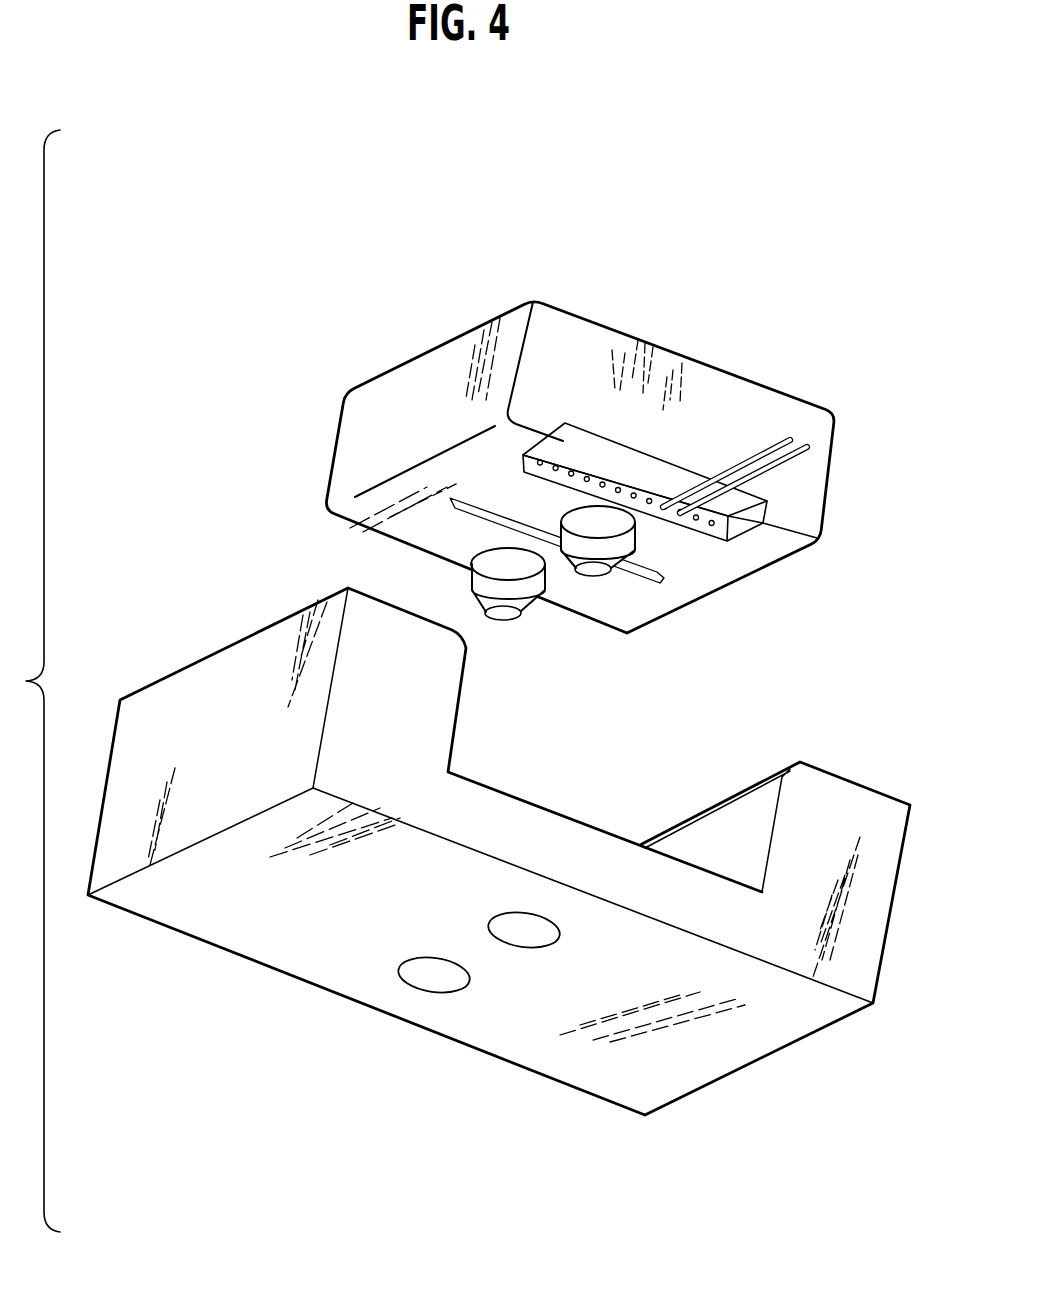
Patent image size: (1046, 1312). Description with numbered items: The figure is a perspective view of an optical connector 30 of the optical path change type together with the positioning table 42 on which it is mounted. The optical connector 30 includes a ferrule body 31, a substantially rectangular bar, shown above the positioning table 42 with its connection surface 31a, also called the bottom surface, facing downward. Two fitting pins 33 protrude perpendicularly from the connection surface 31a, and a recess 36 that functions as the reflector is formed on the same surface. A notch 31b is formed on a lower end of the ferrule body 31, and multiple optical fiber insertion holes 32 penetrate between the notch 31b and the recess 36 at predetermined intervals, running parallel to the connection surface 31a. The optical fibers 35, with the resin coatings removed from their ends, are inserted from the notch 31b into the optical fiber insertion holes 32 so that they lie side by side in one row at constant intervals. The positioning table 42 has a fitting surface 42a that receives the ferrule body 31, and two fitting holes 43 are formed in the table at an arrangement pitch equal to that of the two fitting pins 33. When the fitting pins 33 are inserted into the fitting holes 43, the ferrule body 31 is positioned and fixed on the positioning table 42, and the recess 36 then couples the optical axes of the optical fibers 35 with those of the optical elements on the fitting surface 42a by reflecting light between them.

The optical connector 30 is at (357, 300).
The ferrule body 31 is at (438, 362).
The connection surface 31a is at (367, 511).
The notch 31b is at (677, 484).
The optical fiber insertion holes 32 is at (604, 481).
The fitting pins 33 is at (584, 569).
The optical fibers 35 is at (757, 460).
The recess 36 is at (638, 577).
The positioning table 42 is at (227, 678).
The fitting surface 42a is at (590, 822).
The fitting holes 43 is at (508, 932).